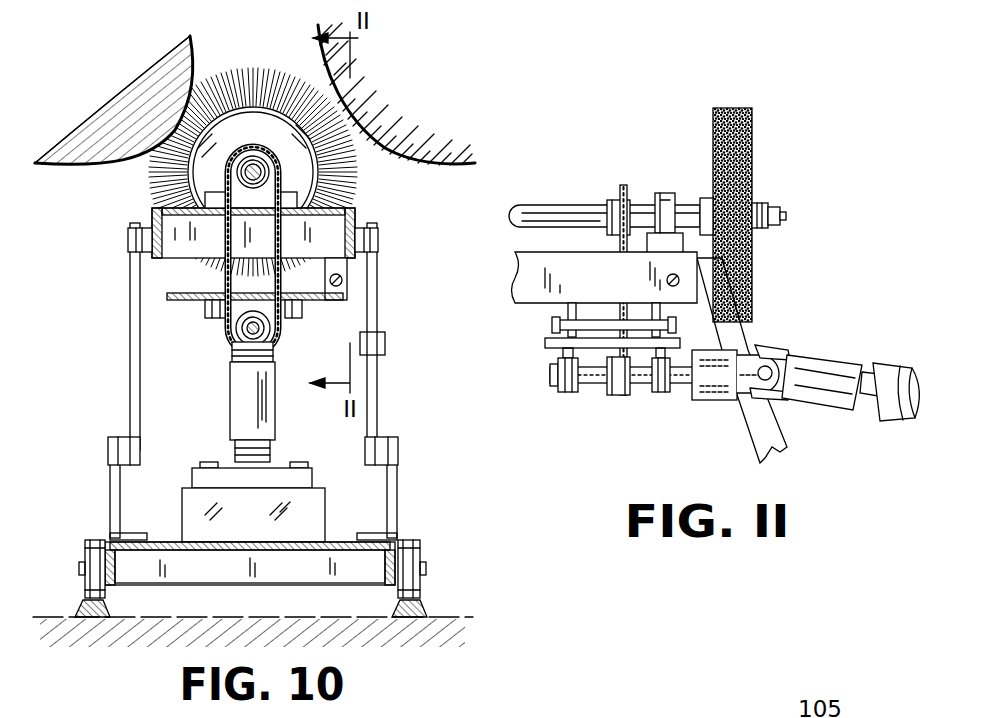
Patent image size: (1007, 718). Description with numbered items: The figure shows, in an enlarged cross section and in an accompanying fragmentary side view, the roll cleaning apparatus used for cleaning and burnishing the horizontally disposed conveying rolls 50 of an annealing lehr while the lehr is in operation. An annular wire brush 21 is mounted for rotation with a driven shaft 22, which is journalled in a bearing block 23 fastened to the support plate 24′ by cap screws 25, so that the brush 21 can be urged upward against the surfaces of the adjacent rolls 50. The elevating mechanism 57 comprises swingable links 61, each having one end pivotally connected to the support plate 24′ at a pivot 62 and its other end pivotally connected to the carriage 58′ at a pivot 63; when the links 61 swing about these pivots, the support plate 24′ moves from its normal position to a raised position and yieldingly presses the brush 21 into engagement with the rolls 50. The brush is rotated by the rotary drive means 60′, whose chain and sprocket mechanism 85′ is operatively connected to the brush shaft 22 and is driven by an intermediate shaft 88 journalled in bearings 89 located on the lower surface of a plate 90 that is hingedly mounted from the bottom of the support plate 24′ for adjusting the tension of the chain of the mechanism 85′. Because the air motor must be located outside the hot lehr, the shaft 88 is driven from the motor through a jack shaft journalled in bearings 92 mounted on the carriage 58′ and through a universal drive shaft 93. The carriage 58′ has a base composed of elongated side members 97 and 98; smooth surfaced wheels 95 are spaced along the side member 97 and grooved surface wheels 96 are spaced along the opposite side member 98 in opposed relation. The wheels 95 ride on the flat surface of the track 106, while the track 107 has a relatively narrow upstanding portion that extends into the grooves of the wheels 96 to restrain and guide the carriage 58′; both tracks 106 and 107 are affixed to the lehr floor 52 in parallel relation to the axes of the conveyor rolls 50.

In FIG. 10, the wire brush 21 is at (262, 68).
In FIG. 11, the wire brush 21 is at (740, 108).
In FIG. 10, the driven shaft 22 is at (250, 164).
In FIG. 11, the driven shaft 22 is at (548, 205).
In FIG. 11, the bearing block 23 is at (668, 195).
In FIG. 10, the support plate 24′ is at (152, 212).
In FIG. 11, the support plate 24′ is at (515, 282).
In FIG. 11, the cap screw 25 is at (665, 222).
In FIG. 10, the conveying roll 50 is at (63, 157).
In FIG. 10, the lehr floor 52 is at (450, 617).
In FIG. 10, the elevating mechanism 57 is at (397, 300).
In FIG. 10, the carriage 58′ is at (285, 580).
In FIG. 11, the rotary drive means 60′ is at (800, 322).
In FIG. 10, the swingable link 61 is at (130, 356).
In FIG. 11, the swingable link 61 is at (775, 440).
In FIG. 10, the pivotal connection 62 is at (127, 240).
In FIG. 11, the pivotal connection 62 is at (667, 280).
In FIG. 10, the pivotal connection 63 is at (108, 450).
In FIG. 10, the chain and sprocket mechanism 85′ is at (211, 343).
In FIG. 11, the chain and sprocket mechanism 85′ is at (610, 422).
In FIG. 10, the intermediate shaft 88 is at (271, 340).
In FIG. 11, the intermediate shaft 88 is at (588, 393).
In FIG. 10, the bearing 89 is at (303, 308).
In FIG. 11, the bearing 89 is at (560, 385).
In FIG. 10, the plate 90 is at (190, 301).
In FIG. 11, the plate 90 is at (548, 341).
In FIG. 10, the bearing 92 is at (292, 467).
In FIG. 10, the universal drive shaft 93 is at (238, 415).
In FIG. 11, the universal drive shaft 93 is at (893, 365).
In FIG. 10, the smooth surfaced wheel 95 is at (85, 540).
In FIG. 10, the grooved surface wheel 96 is at (418, 538).
In FIG. 10, the side member 97 is at (118, 585).
In FIG. 10, the side member 98 is at (378, 580).
In FIG. 10, the track 106 is at (80, 605).
In FIG. 10, the track 107 is at (420, 605).